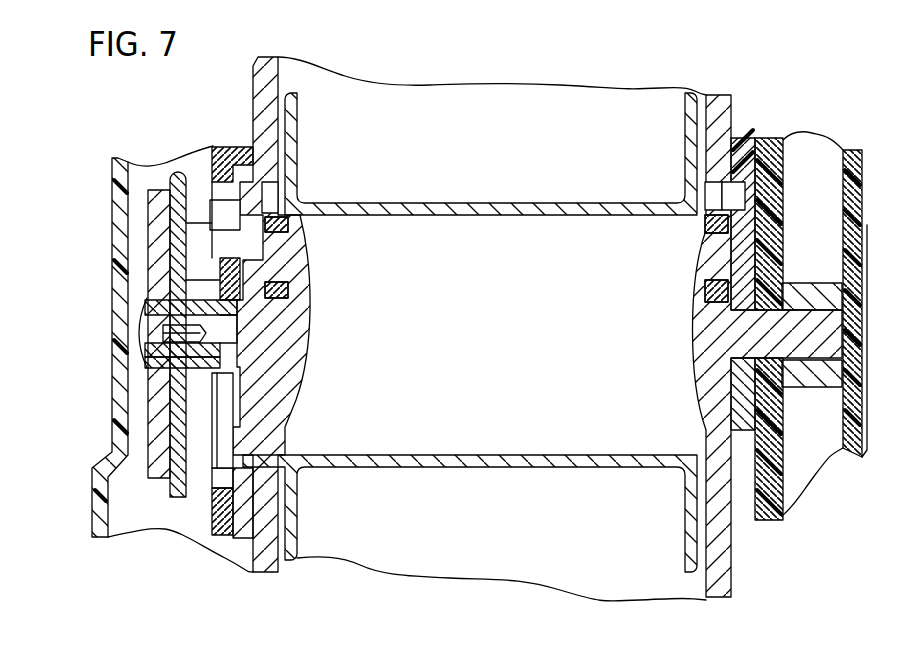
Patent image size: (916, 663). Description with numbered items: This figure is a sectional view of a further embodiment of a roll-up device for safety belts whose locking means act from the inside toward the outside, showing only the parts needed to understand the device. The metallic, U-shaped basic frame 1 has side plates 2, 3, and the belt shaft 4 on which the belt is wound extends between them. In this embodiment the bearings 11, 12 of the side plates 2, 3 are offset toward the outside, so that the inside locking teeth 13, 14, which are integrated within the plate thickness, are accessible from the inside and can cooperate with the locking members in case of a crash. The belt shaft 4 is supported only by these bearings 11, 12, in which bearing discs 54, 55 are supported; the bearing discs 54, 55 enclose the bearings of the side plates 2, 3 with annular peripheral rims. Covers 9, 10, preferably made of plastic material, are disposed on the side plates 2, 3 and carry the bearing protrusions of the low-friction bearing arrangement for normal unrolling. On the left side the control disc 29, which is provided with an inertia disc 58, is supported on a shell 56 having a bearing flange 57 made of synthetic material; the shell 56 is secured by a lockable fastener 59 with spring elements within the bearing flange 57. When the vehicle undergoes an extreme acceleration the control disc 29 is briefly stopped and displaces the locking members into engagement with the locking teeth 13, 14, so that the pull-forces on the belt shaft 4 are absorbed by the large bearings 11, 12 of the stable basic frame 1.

The basic frame 1 is at (482, 562).
The side plate 2 is at (258, 82).
The side plate 3 is at (718, 110).
The belt shaft 4 is at (385, 442).
The cover 9 is at (113, 177).
The cover 10 is at (862, 192).
The bearing surface 11 is at (247, 193).
The bearing surface 12 is at (772, 197).
The locking teeth 13 is at (271, 192).
The locking teeth 14 is at (712, 200).
The control disc 29 is at (170, 203).
The bearing disc 54 is at (253, 443).
The bearing disc 55 is at (743, 167).
The shell 56 is at (170, 350).
The bearing flange 57 is at (220, 272).
The inertia disc 58 is at (157, 422).
The lockable fastener 59 is at (137, 332).